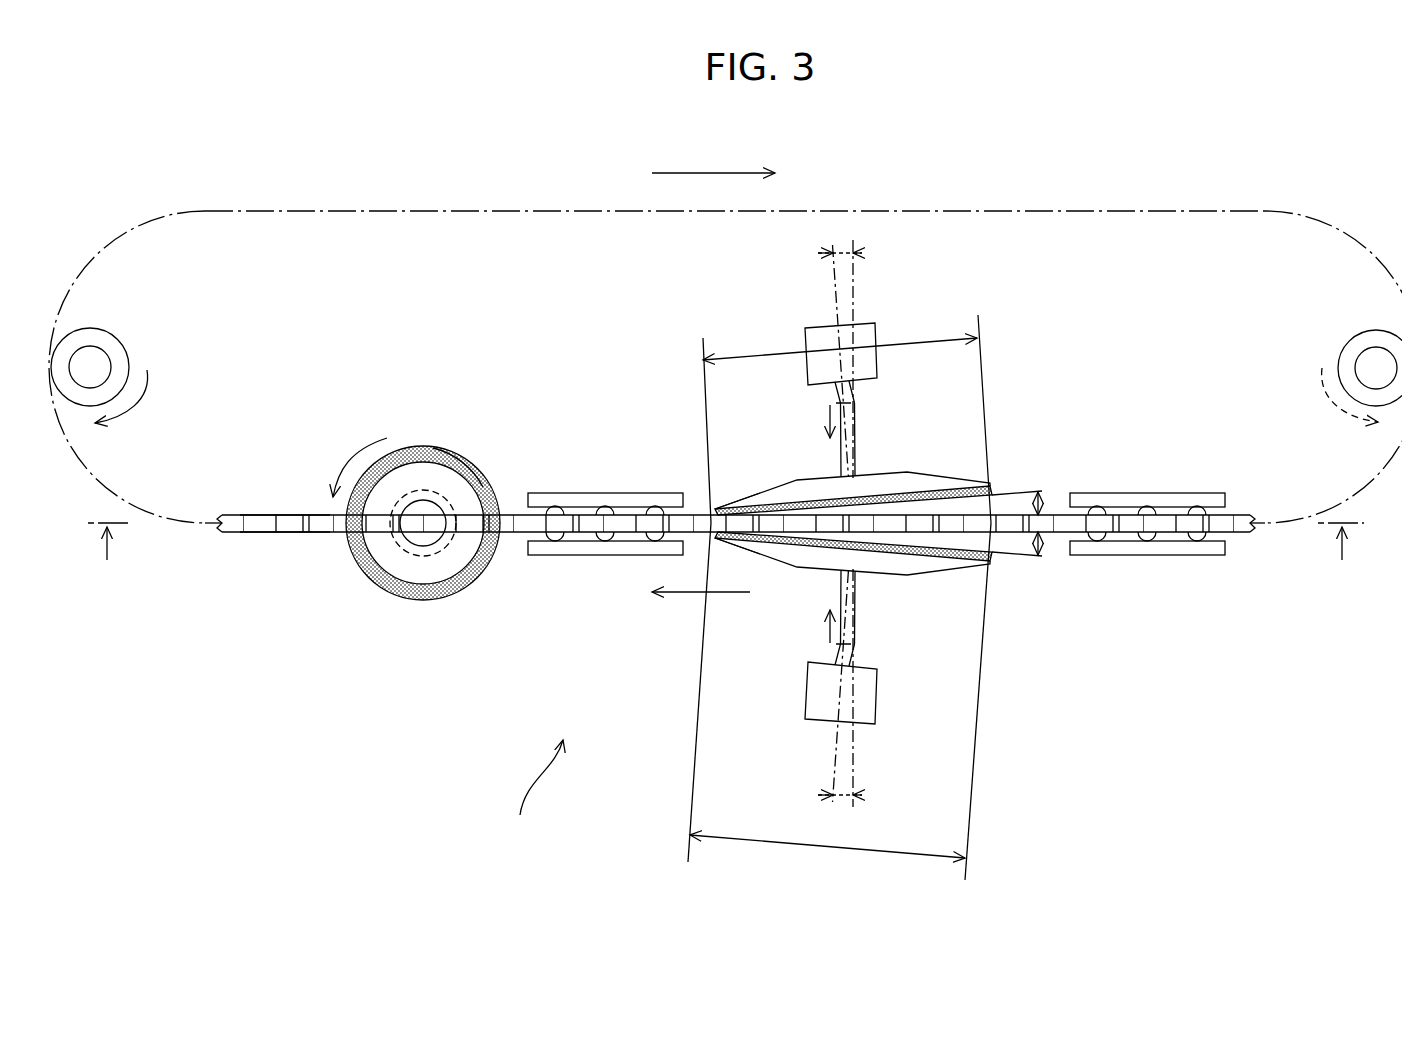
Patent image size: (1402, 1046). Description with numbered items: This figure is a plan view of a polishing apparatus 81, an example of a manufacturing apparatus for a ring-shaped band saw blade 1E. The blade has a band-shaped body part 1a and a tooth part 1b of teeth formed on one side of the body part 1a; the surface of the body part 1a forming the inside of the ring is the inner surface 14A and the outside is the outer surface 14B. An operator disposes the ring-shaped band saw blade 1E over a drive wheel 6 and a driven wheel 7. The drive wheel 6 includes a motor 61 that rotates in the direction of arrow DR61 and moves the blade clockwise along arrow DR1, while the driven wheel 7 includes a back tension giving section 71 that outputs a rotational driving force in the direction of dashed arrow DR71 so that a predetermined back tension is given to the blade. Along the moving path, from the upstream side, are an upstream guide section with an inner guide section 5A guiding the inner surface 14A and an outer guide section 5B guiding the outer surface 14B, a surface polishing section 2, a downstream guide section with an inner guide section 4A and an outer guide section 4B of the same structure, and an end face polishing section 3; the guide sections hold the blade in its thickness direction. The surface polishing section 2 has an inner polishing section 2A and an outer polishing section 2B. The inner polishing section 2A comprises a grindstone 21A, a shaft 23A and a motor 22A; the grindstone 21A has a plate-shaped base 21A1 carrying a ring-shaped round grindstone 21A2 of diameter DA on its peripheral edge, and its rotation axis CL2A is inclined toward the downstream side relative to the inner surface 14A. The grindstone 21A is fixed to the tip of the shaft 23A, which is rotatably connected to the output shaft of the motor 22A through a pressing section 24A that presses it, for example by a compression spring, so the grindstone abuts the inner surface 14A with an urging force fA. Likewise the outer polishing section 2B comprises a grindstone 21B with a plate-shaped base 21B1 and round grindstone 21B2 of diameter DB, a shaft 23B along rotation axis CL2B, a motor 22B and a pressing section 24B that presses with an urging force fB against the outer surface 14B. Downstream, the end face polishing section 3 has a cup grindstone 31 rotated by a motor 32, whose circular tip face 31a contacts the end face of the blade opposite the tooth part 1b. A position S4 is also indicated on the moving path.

The ring-shaped band saw blade 1E is at (253, 535).
The body part 1a is at (273, 535).
The tooth part 1b is at (292, 520).
The inner surface 14A is at (315, 513).
The outer surface 14B is at (327, 535).
The surface polishing section 2 is at (1028, 695).
The inner polishing section 2A is at (899, 381).
The outer polishing section 2B is at (889, 701).
The grindstone 21A is at (967, 472).
The grindstone 21B is at (965, 575).
The plate-shaped base 21A1 is at (773, 488).
The plate-shaped base 21B1 is at (773, 559).
The round grindstone 21A2 is at (995, 487).
The round grindstone 21B2 is at (995, 560).
The motor 22A is at (860, 325).
The motor 22B is at (860, 723).
The shaft 23A is at (857, 428).
The shaft 23B is at (860, 587).
The pressing section 24A is at (855, 385).
The pressing section 24B is at (850, 655).
The end face polishing section 3 is at (452, 612).
The cup grindstone 31 is at (433, 448).
The circular tip face 31a is at (473, 463).
The motor 32 is at (415, 556).
The inner guide section 4A is at (607, 492).
The outer guide section 4B is at (603, 557).
The inner guide section 5A is at (1148, 492).
The outer guide section 5B is at (1148, 556).
The drive wheel 6 is at (106, 338).
The motor 61 is at (112, 363).
The driven wheel 7 is at (1363, 340).
The back tension giving section 71 is at (1360, 362).
The polishing apparatus 81 is at (533, 793).
The rotatory moving direction DR1 is at (701, 576).
The rotation direction of motor DR61 is at (145, 401).
The rotational driving force direction DR71 is at (1329, 401).
The rotation axis CL2A is at (835, 289).
The rotation axis CL2B is at (835, 759).
The diameter DA is at (1003, 324).
The diameter DB is at (958, 672).
The urging force fA is at (813, 421).
The urging force fB is at (813, 626).
The position S4 is at (726, 566).